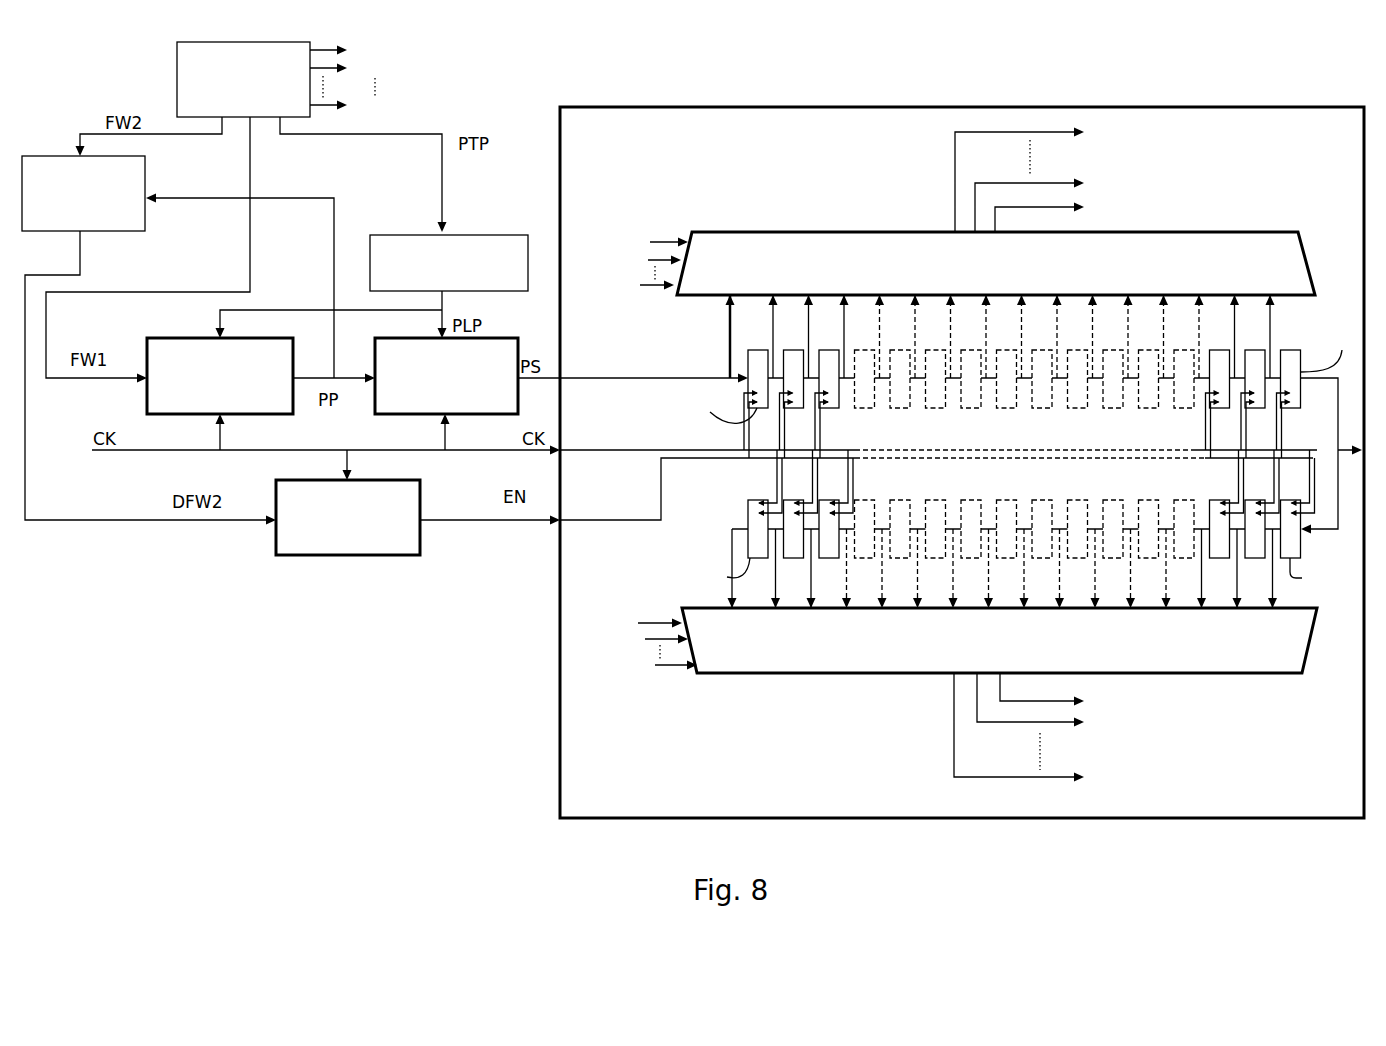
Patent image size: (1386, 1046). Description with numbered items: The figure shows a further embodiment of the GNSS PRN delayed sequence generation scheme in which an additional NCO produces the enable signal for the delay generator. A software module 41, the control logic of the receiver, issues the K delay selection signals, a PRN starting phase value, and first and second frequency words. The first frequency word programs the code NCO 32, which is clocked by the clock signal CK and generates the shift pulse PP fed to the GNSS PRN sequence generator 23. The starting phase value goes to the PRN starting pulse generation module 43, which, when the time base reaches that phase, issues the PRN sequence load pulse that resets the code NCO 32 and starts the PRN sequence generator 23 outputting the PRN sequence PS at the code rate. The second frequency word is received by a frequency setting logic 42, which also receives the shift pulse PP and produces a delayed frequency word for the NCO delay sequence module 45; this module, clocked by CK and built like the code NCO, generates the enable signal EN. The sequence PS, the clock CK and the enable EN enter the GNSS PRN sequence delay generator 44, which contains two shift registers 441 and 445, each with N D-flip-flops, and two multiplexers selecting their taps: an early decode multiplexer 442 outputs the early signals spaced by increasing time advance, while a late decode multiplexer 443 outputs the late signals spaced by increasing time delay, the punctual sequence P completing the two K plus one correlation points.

The software module 41 is at (185, 60).
The frequency setting logic 42 is at (134, 178).
The PRN starting pulse generation module 43 is at (474, 247).
The code NCO 32 is at (185, 348).
The GNSS PRN sequence generator 23 is at (418, 390).
The NCO delay sequence module 45 is at (403, 555).
The GNSS PRN sequence delay generator 44 is at (1037, 117).
The shift register 441 is at (742, 362).
The early decode multiplexer 442 is at (1280, 242).
The late decode multiplexer 443 is at (1240, 674).
The shift register 445 is at (745, 520).